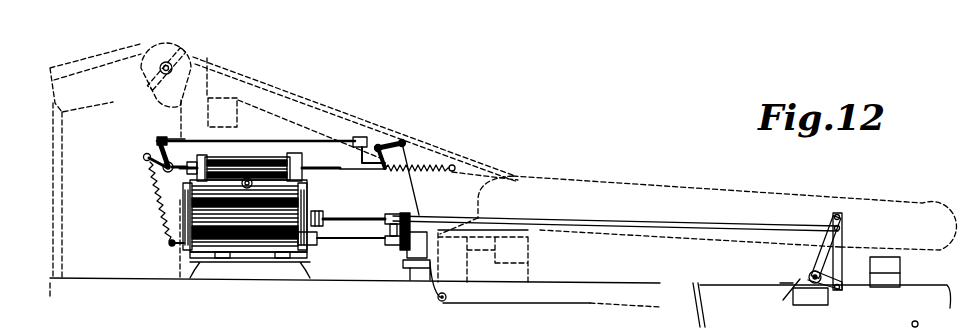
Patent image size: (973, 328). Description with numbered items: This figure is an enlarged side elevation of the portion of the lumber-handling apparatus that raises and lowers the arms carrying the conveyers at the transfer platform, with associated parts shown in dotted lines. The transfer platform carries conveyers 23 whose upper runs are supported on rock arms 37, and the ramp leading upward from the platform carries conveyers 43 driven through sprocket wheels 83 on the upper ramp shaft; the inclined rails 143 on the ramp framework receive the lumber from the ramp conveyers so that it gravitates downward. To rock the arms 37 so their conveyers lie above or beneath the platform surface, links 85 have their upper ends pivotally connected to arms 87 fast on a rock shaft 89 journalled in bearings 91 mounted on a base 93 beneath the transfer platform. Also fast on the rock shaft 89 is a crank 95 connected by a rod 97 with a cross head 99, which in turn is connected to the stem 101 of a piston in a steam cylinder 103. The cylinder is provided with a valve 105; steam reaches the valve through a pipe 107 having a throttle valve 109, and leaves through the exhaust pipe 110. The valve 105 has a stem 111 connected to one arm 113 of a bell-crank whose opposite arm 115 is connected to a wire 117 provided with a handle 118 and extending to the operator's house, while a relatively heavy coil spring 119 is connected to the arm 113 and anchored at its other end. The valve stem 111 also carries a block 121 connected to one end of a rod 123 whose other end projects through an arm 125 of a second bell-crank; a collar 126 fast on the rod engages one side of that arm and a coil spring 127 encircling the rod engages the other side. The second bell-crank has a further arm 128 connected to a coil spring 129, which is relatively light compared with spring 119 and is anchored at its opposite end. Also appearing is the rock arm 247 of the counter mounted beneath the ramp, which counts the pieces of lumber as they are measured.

The inclined rails 143 is at (77, 63).
The sprocket wheels 83 is at (161, 51).
The conveyers 43 is at (338, 103).
The collar 126 is at (180, 138).
The coil spring 127 is at (162, 138).
The arm 125 is at (163, 147).
The arm 128 is at (146, 157).
The throttle valve 109 is at (153, 170).
The pipe 107 is at (186, 166).
The coil spring 129 is at (157, 212).
The valve 105 is at (277, 141).
The exhaust pipe 110 is at (272, 167).
The rod 123 is at (298, 141).
The block 121 is at (353, 153).
The valve stem 111 is at (317, 172).
The piston stem 101 is at (322, 216).
The steam cylinder 103 is at (263, 252).
The cross head 99 is at (390, 248).
The arm 115 is at (388, 146).
The arm 113 is at (384, 163).
The coil spring 119 is at (428, 166).
The wire 117 is at (408, 187).
The rod 97 is at (620, 225).
The conveyers 23 is at (695, 187).
The rock arms 37 is at (755, 200).
The crank 95 is at (822, 256).
The links 85 is at (822, 264).
The rock shaft 89 is at (808, 277).
The arms 87 is at (870, 273).
The bearings 91 is at (783, 300).
The base 93 is at (817, 303).
The handle 118 is at (695, 318).
The rock arm 247 is at (878, 322).